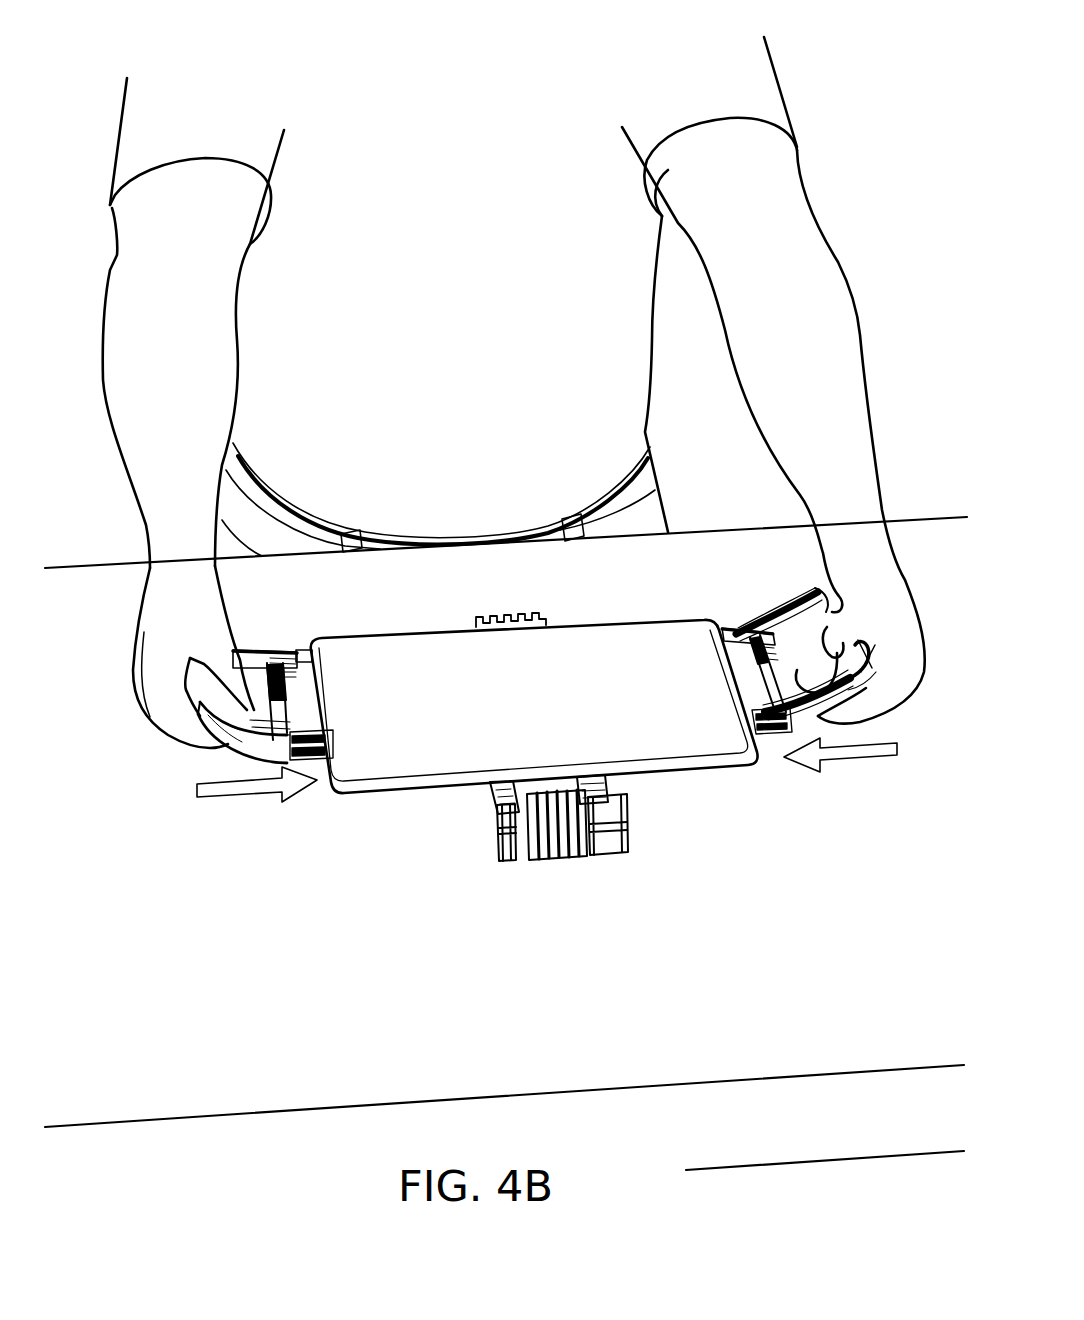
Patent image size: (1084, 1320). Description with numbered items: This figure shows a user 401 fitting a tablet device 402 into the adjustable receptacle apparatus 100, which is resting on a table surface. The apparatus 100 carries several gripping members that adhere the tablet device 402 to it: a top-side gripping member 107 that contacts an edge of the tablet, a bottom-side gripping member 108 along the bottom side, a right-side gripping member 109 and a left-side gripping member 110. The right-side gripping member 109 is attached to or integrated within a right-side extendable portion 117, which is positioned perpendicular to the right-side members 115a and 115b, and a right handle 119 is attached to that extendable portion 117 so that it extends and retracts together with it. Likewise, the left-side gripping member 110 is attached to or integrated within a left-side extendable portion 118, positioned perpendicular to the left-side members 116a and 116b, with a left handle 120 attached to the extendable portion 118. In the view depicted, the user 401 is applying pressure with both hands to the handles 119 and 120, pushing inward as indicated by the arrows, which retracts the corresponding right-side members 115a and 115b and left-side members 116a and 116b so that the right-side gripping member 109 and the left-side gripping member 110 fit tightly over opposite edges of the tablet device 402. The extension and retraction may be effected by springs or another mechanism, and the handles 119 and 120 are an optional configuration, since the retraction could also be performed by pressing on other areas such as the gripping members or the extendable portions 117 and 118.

The user 401 is at (152, 108).
The tablet device 402 is at (452, 652).
The adjustable receptacle apparatus 100 is at (470, 903).
The top-side gripping member 107 is at (570, 855).
The bottom-side gripping member 108 is at (518, 613).
The right-side gripping member 109 is at (276, 660).
The left-side gripping member 110 is at (754, 670).
The right-side member 115a is at (333, 779).
The right-side member 115b is at (300, 652).
The left-side member 116a is at (770, 740).
The left-side member 116b is at (738, 628).
The right-side extendable portion 117 is at (290, 721).
The left-side extendable portion 118 is at (775, 694).
The right handle 119 is at (206, 700).
The left handle 120 is at (862, 668).